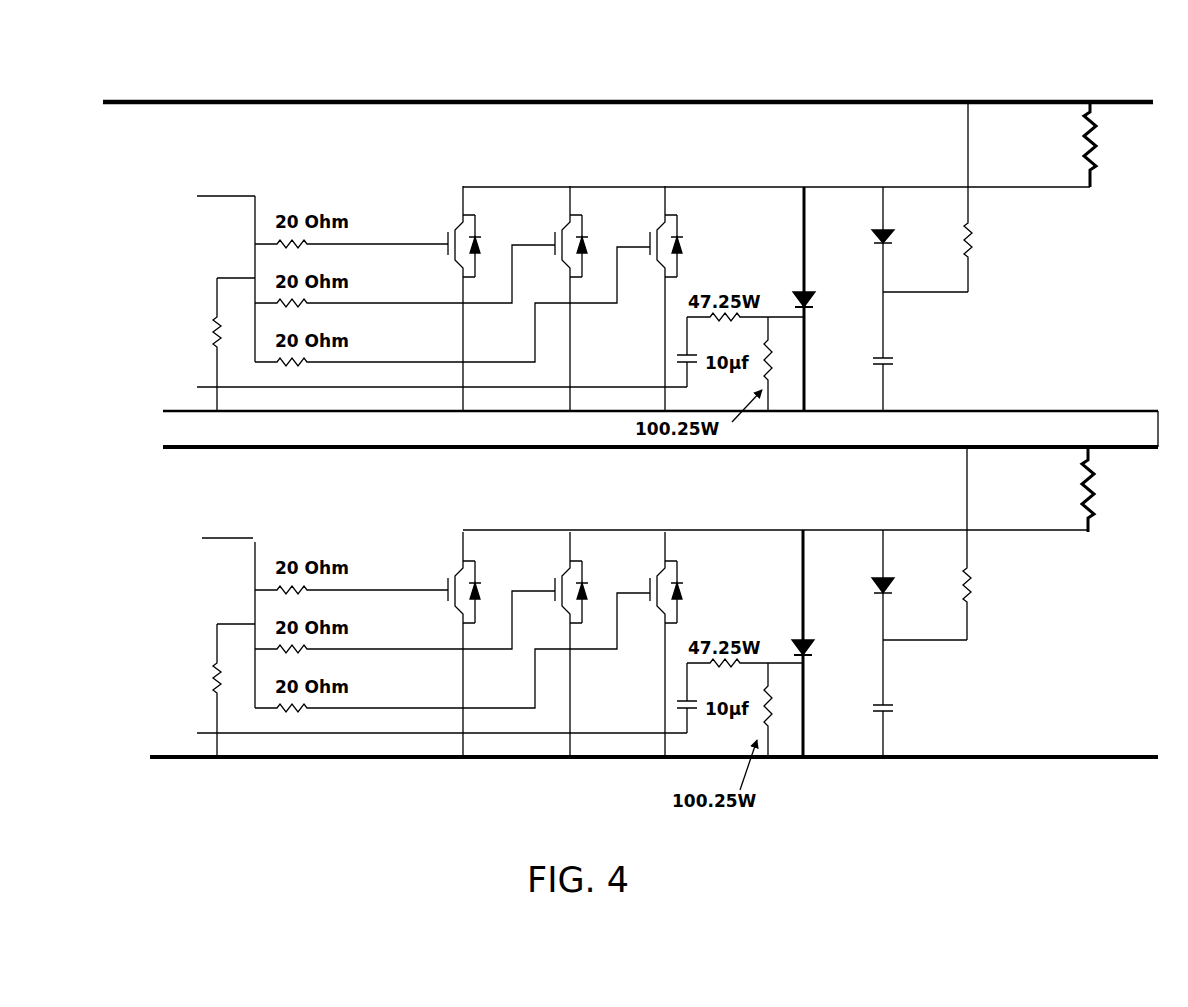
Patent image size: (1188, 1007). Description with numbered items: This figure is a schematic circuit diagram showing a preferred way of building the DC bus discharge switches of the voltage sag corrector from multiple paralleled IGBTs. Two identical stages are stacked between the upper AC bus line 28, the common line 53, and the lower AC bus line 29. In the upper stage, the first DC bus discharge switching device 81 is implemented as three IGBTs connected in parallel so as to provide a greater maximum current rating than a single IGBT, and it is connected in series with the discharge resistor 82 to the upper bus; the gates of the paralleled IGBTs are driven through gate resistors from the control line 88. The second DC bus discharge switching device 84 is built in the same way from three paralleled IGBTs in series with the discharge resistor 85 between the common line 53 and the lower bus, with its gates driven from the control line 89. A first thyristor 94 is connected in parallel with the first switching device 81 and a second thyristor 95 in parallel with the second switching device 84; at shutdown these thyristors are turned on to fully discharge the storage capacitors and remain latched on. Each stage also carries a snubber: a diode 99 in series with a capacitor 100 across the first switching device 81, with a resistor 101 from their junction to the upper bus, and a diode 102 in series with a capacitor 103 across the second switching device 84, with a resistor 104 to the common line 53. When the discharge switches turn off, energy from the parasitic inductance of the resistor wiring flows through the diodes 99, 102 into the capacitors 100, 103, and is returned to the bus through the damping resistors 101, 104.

The AC bus line 28 is at (790, 100).
The AC bus line 29 is at (840, 758).
The common line 53 is at (1052, 440).
The first DC bus discharge switching device 81 is at (530, 185).
The second DC bus discharge switching device 84 is at (537, 528).
The discharge resistor 82 is at (1100, 140).
The discharge resistor 85 is at (1107, 490).
The control line 88 is at (227, 196).
The control line 89 is at (207, 538).
The first thyristor 94 is at (796, 289).
The second thyristor 95 is at (796, 633).
The diode 99 is at (876, 236).
The diode 102 is at (879, 582).
The capacitor 100 is at (885, 356).
The capacitor 103 is at (885, 702).
The resistor 101 is at (973, 243).
The resistor 104 is at (970, 602).